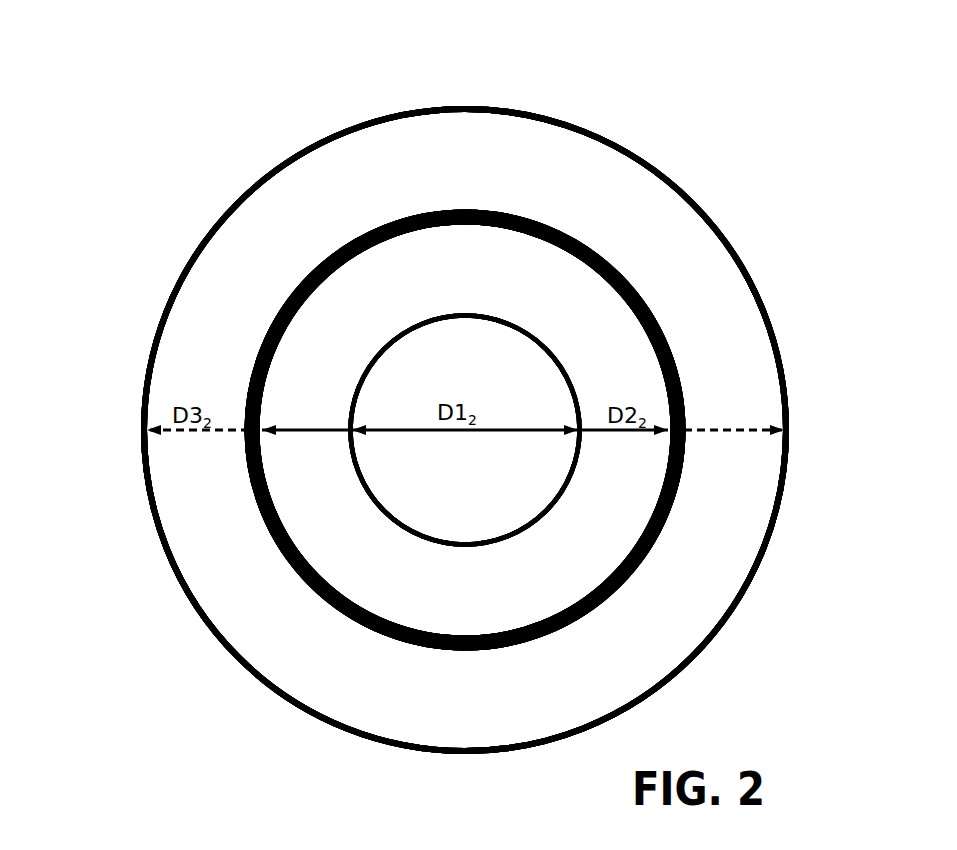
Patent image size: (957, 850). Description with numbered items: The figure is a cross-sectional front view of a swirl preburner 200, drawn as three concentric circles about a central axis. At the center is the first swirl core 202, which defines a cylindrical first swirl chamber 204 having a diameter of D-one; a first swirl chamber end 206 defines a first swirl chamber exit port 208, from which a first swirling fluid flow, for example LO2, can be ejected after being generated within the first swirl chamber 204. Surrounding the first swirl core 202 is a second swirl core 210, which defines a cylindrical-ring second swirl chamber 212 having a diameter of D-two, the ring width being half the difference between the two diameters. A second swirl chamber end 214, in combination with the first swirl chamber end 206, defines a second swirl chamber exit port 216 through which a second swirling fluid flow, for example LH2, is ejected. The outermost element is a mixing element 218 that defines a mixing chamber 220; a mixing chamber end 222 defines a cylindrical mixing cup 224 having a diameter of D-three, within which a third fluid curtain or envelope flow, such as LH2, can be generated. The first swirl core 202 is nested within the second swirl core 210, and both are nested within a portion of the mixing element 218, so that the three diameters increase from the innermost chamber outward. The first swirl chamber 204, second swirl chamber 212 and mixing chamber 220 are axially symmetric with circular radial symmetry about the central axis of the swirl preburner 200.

The swirl preburner 200 is at (746, 126).
The first swirl core 202 is at (382, 350).
The first swirl chamber 204 is at (424, 511).
The first swirl chamber end 206 is at (360, 473).
The first swirl chamber exit port 208 is at (524, 376).
The second swirl core 210 is at (681, 470).
The second swirl chamber 212 is at (458, 612).
The second swirl chamber end 214 is at (680, 375).
The second swirl chamber exit port 216 is at (507, 612).
The mixing element 218 is at (145, 407).
The mixing chamber 220 is at (424, 126).
The mixing chamber end 222 is at (145, 485).
The mixing cup 224 is at (478, 126).